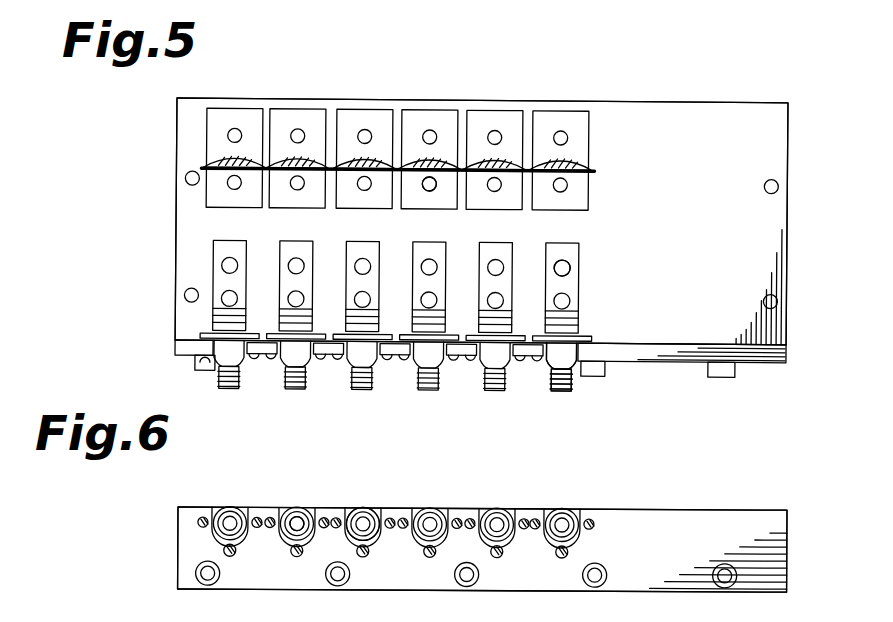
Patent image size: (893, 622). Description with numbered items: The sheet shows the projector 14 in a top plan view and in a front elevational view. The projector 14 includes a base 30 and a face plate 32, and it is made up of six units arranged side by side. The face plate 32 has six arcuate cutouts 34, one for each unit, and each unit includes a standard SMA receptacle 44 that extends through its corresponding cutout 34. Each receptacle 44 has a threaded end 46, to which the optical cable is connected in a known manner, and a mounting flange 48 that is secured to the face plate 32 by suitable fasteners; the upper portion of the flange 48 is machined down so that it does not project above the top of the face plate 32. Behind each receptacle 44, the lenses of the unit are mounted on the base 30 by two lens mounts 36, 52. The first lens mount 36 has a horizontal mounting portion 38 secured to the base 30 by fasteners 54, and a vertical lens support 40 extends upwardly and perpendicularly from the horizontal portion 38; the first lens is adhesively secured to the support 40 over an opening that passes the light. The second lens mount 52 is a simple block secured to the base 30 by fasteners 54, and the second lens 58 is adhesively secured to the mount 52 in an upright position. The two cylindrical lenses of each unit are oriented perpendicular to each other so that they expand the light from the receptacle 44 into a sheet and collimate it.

In FIG. 5, the projector 14 is at (158, 224).
In FIG. 6, the projector 14 is at (156, 539).
In FIG. 5, the base 30 is at (727, 159).
In FIG. 5, the face plate 32 is at (757, 349).
In FIG. 6, the face plate 32 is at (698, 525).
In FIG. 5, the arcuate cutout 34 is at (577, 357).
In FIG. 6, the arcuate cutout 34 is at (568, 510).
In FIG. 5, the first lens mount 36 is at (592, 285).
In FIG. 5, the horizontal mounting portion 38 is at (572, 250).
In FIG. 5, the vertical lens support 40 is at (581, 327).
In FIG. 5, the SMA receptacle 44 is at (377, 373).
In FIG. 6, the SMA receptacle 44 is at (367, 511).
In FIG. 5, the threaded end 46 is at (365, 389).
In FIG. 6, the threaded end 46 is at (298, 519).
In FIG. 5, the mounting flange 48 is at (203, 327).
In FIG. 5, the second lens mount 52 is at (605, 133).
In FIG. 5, the fasteners 54 is at (430, 189).
In FIG. 5, the second lens 58 is at (217, 150).